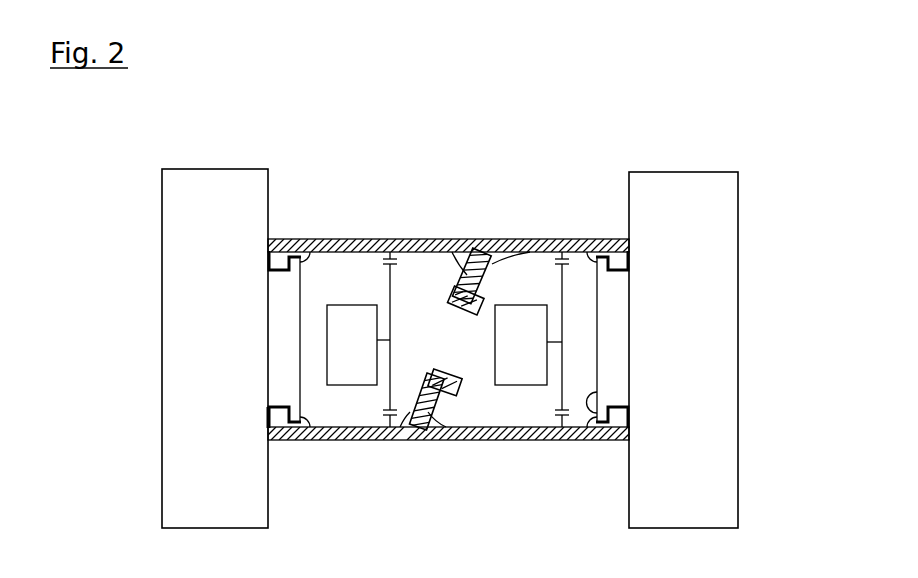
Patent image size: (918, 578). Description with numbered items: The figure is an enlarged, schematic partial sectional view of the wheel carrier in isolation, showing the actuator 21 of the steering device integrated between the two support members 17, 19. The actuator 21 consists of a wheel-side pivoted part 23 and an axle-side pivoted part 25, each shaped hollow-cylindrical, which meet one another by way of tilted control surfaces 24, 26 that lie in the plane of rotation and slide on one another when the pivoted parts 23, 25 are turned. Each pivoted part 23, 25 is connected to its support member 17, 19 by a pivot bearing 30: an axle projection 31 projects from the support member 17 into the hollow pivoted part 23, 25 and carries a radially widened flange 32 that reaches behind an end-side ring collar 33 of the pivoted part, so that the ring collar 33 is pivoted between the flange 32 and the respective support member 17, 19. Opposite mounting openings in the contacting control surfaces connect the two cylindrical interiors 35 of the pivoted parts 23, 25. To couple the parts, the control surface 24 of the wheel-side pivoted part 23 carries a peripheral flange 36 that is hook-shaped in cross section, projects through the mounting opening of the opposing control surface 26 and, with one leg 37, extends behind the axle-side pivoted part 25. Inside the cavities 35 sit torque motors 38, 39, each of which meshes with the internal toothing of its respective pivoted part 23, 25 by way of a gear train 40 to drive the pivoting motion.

The support member 17 is at (199, 487).
The support member 19 is at (663, 490).
The actuator 21 is at (451, 105).
The wheel-side pivoted part 23 is at (347, 238).
The control surface 24 is at (456, 238).
The axle-side pivoted part 25 is at (567, 238).
The control surface 26 is at (520, 239).
The pivot bearing 30 is at (268, 260).
The axle projection 31 is at (272, 392).
The flange 32 is at (311, 240).
The ring collar 33 is at (289, 252).
The cylindrical interior 35 is at (358, 413).
The peripheral flange 36 is at (450, 381).
The leg 37 is at (445, 378).
The torque motor 38 is at (369, 375).
The torque motor 39 is at (537, 343).
The gear train 40 is at (392, 292).